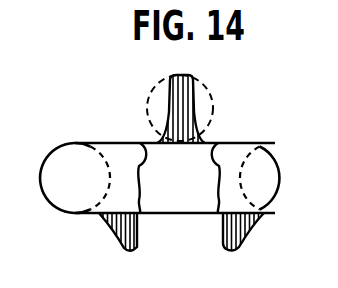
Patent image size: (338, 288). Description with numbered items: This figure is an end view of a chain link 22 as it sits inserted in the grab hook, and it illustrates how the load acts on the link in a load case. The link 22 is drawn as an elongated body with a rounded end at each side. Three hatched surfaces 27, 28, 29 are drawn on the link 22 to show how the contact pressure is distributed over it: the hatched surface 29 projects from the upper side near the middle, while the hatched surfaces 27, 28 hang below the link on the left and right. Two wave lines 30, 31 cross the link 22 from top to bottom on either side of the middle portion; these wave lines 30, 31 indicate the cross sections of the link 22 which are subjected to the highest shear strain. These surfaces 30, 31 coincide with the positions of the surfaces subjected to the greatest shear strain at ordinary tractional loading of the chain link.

The link 22 is at (68, 154).
The hatched surface 27 is at (116, 229).
The hatched surface 28 is at (242, 229).
The hatched surface 29 is at (185, 103).
The wave line 30 is at (141, 143).
The wave line 31 is at (214, 143).